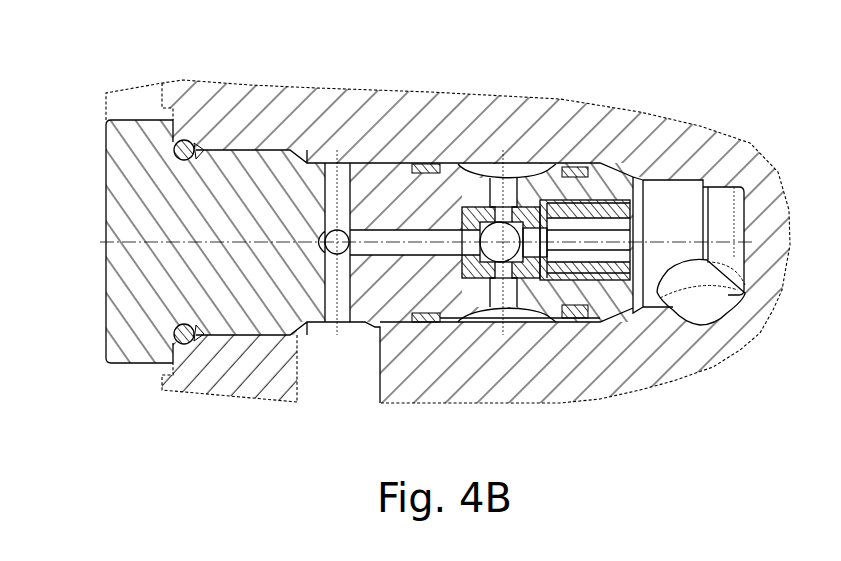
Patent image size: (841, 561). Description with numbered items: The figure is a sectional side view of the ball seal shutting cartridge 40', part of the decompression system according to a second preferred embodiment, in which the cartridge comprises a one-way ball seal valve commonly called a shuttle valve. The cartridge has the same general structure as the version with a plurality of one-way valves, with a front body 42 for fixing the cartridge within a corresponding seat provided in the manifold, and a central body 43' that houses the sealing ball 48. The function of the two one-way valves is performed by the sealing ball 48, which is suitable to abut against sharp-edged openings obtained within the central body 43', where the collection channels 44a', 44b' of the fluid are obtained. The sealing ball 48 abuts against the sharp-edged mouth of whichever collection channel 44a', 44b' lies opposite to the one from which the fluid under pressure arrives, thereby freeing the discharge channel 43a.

The ball seal shutting cartridge 40' is at (423, 220).
The front body 42 is at (193, 298).
The sealing ball 48 is at (478, 207).
The discharge channel 43a is at (610, 188).
The central body 43' is at (677, 180).
The collection channel 44a' is at (507, 390).
The collection channel 44b' is at (671, 358).